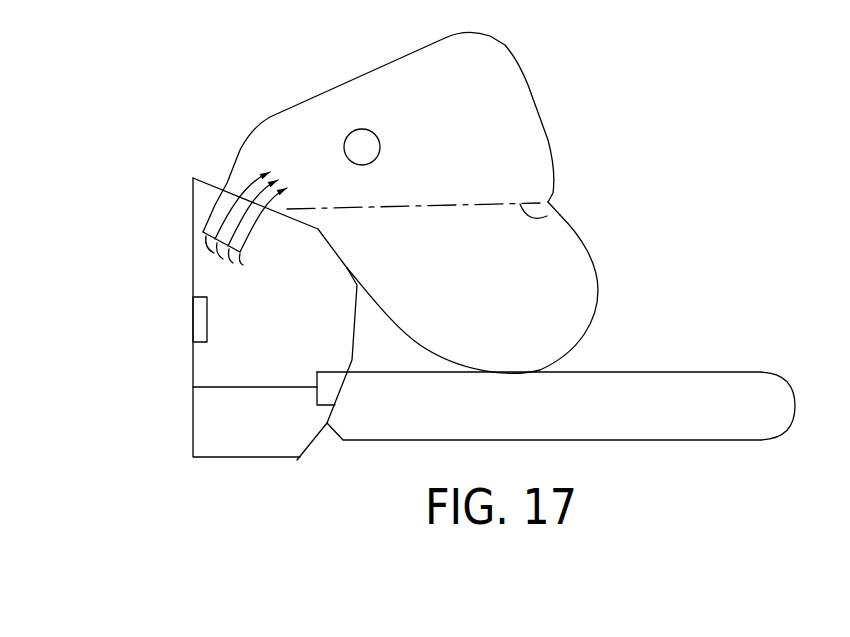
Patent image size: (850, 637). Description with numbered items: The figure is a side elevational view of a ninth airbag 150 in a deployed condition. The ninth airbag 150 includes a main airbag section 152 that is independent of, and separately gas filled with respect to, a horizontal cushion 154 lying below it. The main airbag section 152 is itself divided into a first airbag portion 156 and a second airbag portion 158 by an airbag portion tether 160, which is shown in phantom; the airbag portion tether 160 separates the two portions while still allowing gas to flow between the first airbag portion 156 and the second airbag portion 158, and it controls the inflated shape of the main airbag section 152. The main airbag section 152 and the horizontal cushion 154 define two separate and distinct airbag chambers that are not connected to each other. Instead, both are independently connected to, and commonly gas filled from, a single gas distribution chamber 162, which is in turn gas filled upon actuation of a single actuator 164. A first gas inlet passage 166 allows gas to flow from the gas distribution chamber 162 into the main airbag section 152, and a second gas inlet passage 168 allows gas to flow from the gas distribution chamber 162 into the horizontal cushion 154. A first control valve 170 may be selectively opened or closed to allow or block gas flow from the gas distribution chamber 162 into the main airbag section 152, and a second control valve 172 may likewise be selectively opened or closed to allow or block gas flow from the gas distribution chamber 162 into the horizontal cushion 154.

The ninth airbag 150 is at (614, 140).
The main airbag section 152 is at (572, 185).
The horizontal cushion 154 is at (627, 385).
The first airbag portion 156 is at (520, 117).
The second airbag portion 158 is at (582, 265).
The airbag portion tether 160 is at (558, 217).
The gas distribution chamber 162 is at (242, 347).
The actuator 164 is at (199, 316).
The first gas inlet passage 166 is at (280, 213).
The second gas inlet passage 168 is at (337, 373).
The first control valve 170 is at (233, 193).
The second control valve 172 is at (327, 392).